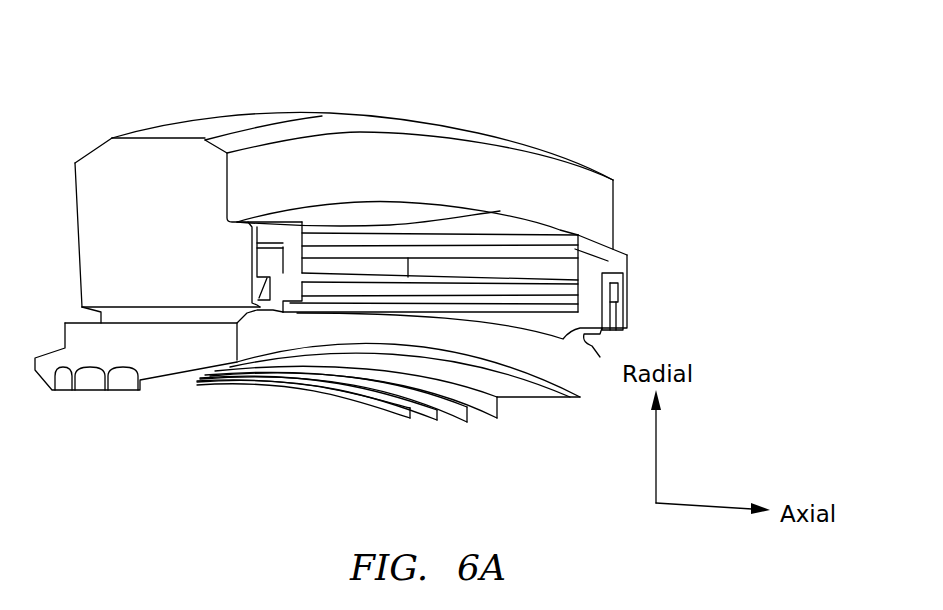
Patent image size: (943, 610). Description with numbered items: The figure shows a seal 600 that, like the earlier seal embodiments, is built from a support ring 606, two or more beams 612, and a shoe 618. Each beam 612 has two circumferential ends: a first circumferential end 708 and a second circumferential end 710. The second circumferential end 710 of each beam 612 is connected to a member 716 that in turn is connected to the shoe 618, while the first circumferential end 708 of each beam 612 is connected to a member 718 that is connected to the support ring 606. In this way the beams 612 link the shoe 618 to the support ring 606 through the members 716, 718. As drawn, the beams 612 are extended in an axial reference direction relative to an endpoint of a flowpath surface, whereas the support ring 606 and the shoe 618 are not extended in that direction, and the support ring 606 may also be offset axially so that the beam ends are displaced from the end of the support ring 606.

The seal 600 is at (136, 97).
The support ring 606 is at (448, 122).
The beams 612 is at (433, 283).
The shoe 618 is at (265, 335).
The first circumferential end 708 is at (575, 291).
The second circumferential end 710 is at (322, 283).
The member 716 is at (287, 264).
The member 718 is at (607, 258).